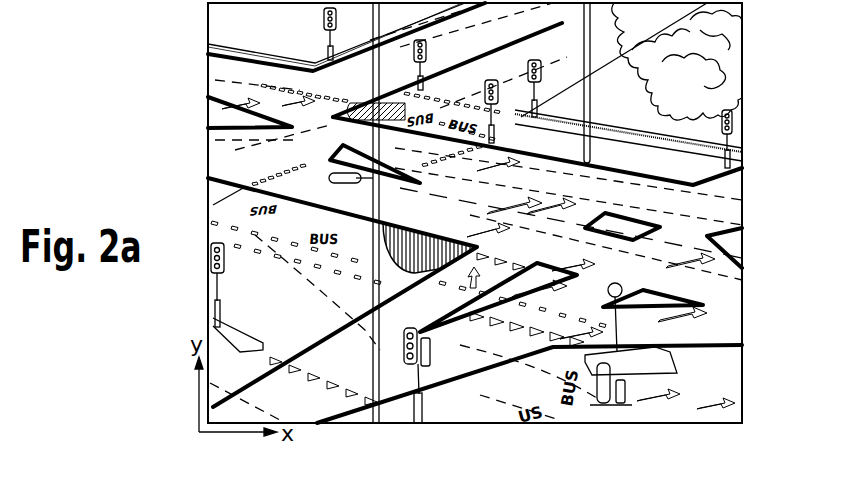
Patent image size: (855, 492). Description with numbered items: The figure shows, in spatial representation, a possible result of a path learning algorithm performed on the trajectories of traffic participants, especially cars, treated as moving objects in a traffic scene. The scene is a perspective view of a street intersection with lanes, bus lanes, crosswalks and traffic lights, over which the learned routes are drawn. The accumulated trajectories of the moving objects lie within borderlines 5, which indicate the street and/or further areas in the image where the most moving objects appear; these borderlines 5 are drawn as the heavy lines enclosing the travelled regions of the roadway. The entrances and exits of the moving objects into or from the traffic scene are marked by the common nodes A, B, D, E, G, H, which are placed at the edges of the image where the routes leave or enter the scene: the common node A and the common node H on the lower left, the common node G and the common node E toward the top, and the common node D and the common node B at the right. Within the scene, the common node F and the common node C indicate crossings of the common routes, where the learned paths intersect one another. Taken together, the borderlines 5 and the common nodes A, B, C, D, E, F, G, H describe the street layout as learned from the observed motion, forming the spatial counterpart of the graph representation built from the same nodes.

The borderlines 5 is at (713, 177).
The common node A is at (475, 300).
The common node B is at (672, 274).
The common node C is at (568, 214).
The common node D is at (537, 161).
The common node E is at (447, 61).
The common node F is at (261, 116).
The common node G is at (346, 47).
The common node H is at (316, 161).